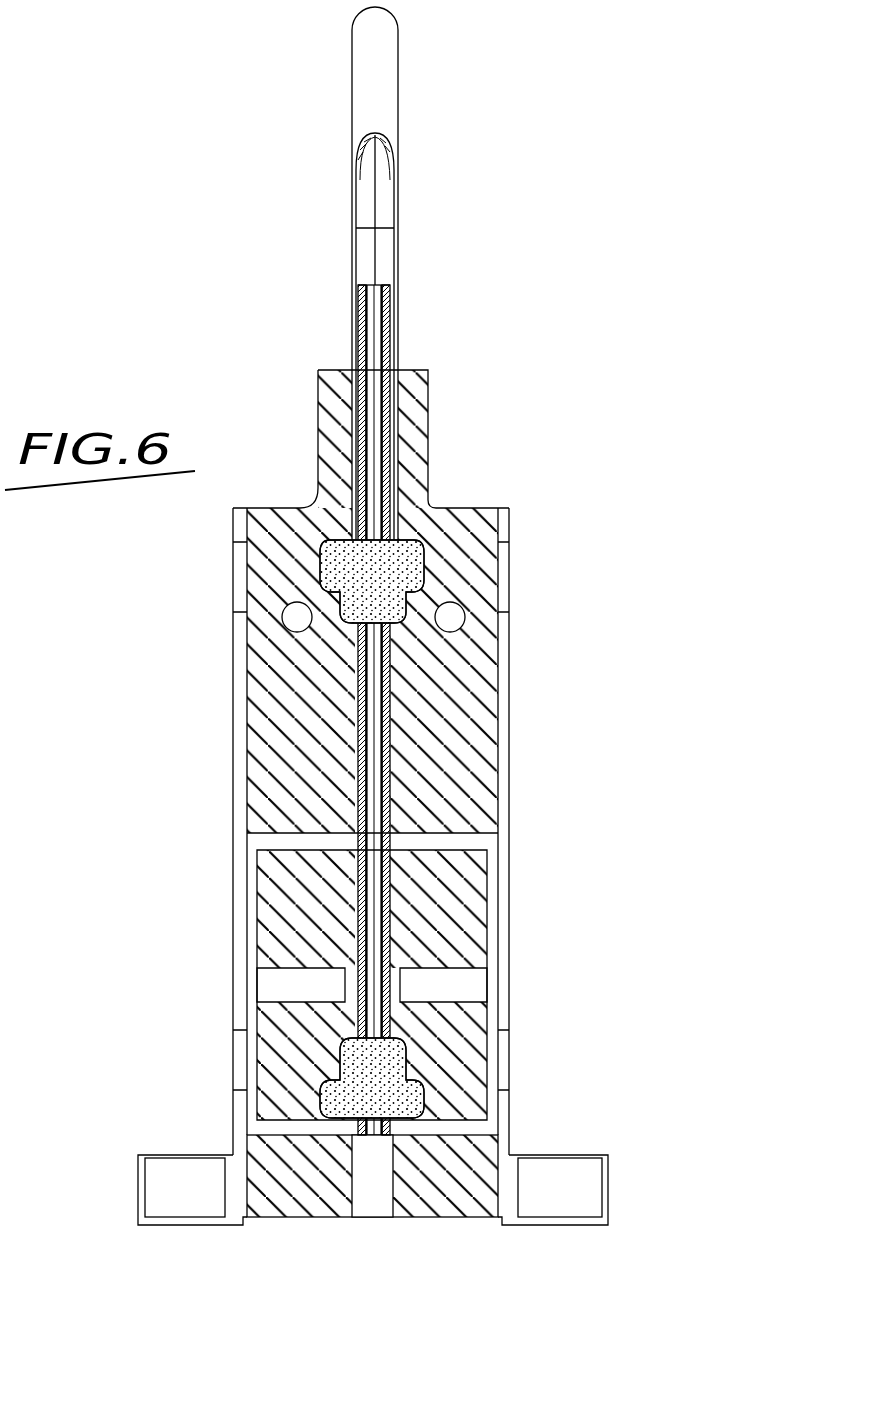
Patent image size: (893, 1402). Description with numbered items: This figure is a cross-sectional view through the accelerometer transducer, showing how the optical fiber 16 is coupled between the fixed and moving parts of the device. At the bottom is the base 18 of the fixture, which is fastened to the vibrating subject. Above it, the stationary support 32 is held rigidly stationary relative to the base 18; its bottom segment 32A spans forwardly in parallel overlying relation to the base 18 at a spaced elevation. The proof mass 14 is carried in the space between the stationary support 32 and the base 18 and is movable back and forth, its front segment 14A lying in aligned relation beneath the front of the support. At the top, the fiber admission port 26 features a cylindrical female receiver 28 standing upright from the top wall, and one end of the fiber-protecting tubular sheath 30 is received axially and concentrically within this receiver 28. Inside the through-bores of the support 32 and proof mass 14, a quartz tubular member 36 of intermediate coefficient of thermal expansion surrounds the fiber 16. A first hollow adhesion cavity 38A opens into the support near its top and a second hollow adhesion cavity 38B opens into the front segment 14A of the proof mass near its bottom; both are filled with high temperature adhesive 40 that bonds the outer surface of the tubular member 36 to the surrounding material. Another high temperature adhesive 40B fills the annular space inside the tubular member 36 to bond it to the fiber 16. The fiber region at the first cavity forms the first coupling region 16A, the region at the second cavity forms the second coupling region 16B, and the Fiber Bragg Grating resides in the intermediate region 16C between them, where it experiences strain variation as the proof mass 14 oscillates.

The proof mass 14 is at (466, 935).
The front segment of the proof mass 14A is at (461, 889).
The optical fiber 16 is at (377, 265).
The first coupling region 16A is at (229, 540).
The second coupling region 16B is at (229, 1036).
The intermediate region 16C is at (229, 625).
The base 18 is at (318, 1203).
The fiber admission port 26 is at (433, 387).
The cylindrical female receiver 28 is at (420, 425).
The fiber-protecting tubular sheath 30 is at (385, 115).
The stationary support 32 is at (466, 701).
The bottom segment of the stationary support 32A is at (489, 758).
The tubular member 36 is at (390, 318).
The first hollow adhesion cavity 38A is at (418, 545).
The second hollow adhesion cavity 38B is at (425, 1095).
The adhesive 40 is at (425, 568).
The high temperature adhesive 40B is at (400, 475).